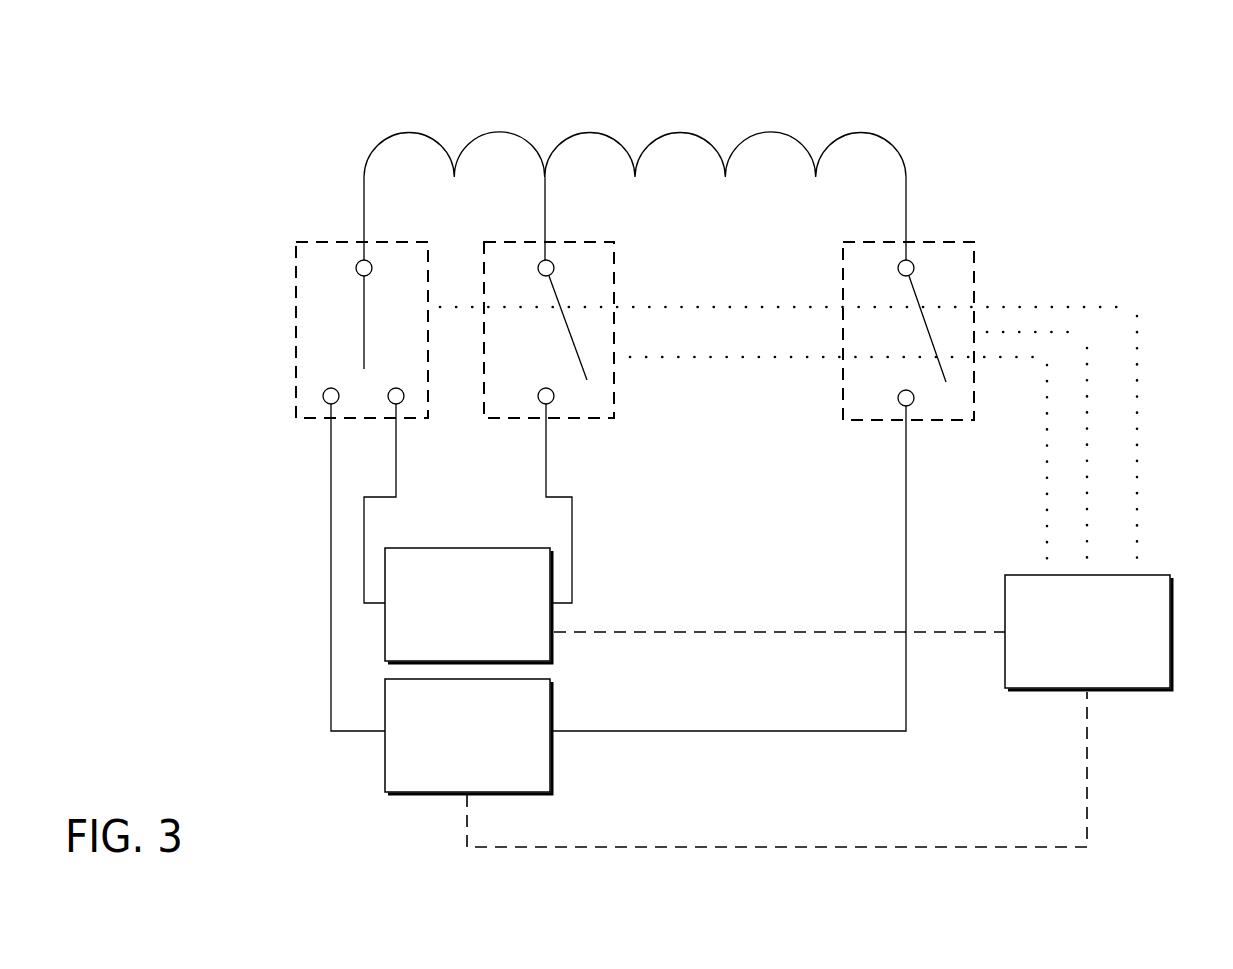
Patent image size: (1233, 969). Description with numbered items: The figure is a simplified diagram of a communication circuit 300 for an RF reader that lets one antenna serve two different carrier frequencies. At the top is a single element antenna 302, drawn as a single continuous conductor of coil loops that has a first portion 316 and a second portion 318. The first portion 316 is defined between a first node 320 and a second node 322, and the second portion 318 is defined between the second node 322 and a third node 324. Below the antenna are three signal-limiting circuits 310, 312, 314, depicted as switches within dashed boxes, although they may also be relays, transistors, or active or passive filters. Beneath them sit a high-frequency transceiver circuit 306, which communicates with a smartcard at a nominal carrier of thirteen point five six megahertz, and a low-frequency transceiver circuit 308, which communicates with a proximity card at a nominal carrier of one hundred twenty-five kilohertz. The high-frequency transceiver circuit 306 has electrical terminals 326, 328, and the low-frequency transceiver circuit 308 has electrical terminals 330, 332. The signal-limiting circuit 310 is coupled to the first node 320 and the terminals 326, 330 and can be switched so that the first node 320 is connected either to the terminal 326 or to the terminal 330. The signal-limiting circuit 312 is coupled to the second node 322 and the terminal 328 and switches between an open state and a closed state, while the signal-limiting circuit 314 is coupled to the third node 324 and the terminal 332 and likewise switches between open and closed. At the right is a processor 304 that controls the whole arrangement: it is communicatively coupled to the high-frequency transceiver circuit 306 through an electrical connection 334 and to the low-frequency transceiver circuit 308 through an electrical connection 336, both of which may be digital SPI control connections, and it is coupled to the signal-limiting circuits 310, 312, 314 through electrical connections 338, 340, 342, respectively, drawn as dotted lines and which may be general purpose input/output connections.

The communication circuit 300 is at (176, 105).
The single element antenna 302 is at (594, 130).
The processor 304 is at (1172, 630).
The high-frequency transceiver circuit 306 is at (467, 548).
The low-frequency transceiver circuit 308 is at (384, 777).
The signal-limiting circuit 310 is at (410, 242).
The signal-limiting circuit 312 is at (594, 242).
The signal-limiting circuit 314 is at (955, 242).
The first portion 316 is at (465, 104).
The second portion 318 is at (749, 104).
The first node 320 is at (359, 262).
The second node 322 is at (541, 262).
The third node 324 is at (901, 262).
The electrical terminal 326 is at (399, 400).
The electrical terminal 328 is at (549, 400).
The electrical terminal 330 is at (328, 400).
The electrical terminal 332 is at (909, 402).
The electrical connection 334 is at (762, 632).
The electrical connection 336 is at (790, 847).
The electrical connection 338 is at (1014, 308).
The electrical connection 340 is at (1045, 491).
The electrical connection 342 is at (1053, 332).